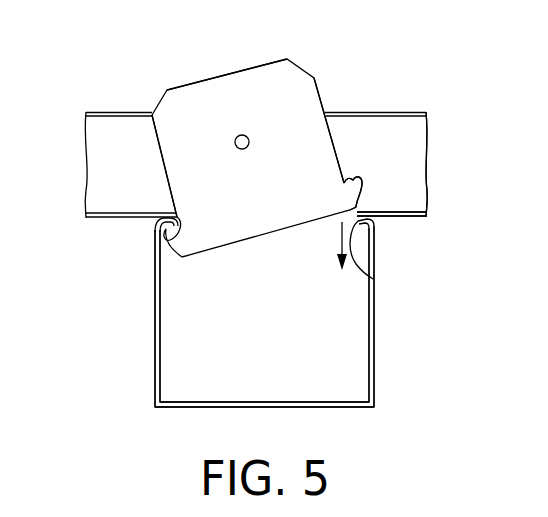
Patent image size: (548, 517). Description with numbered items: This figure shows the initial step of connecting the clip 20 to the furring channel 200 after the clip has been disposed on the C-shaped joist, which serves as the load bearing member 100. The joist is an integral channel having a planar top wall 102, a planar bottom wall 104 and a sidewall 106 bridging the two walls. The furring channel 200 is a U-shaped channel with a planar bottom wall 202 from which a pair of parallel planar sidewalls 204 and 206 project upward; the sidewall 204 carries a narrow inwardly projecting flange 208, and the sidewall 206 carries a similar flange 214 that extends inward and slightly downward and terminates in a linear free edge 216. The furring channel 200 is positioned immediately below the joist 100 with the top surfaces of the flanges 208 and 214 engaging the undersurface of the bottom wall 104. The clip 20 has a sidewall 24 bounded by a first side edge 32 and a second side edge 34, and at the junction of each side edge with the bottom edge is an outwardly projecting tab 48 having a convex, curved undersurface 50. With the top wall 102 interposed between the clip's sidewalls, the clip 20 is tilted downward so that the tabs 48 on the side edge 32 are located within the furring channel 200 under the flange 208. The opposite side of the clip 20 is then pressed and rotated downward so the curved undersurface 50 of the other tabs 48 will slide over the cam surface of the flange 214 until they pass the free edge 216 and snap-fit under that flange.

The clip 20 is at (292, 96).
The sidewall 24 is at (217, 107).
The first side edge 32 is at (157, 142).
The second side edge 34 is at (333, 143).
The tab 48 is at (351, 197).
The curved undersurface 50 is at (358, 203).
The load bearing member 100 is at (117, 100).
The top wall 102 is at (401, 108).
The bottom wall 104 is at (412, 218).
The sidewall 106 is at (405, 185).
The furring channel 200 is at (145, 326).
The bottom wall 202 is at (257, 403).
The sidewall 204 is at (153, 353).
The sidewall 206 is at (374, 345).
The flange 208 is at (157, 228).
The flange 214 is at (374, 221).
The free edge 216 is at (374, 279).